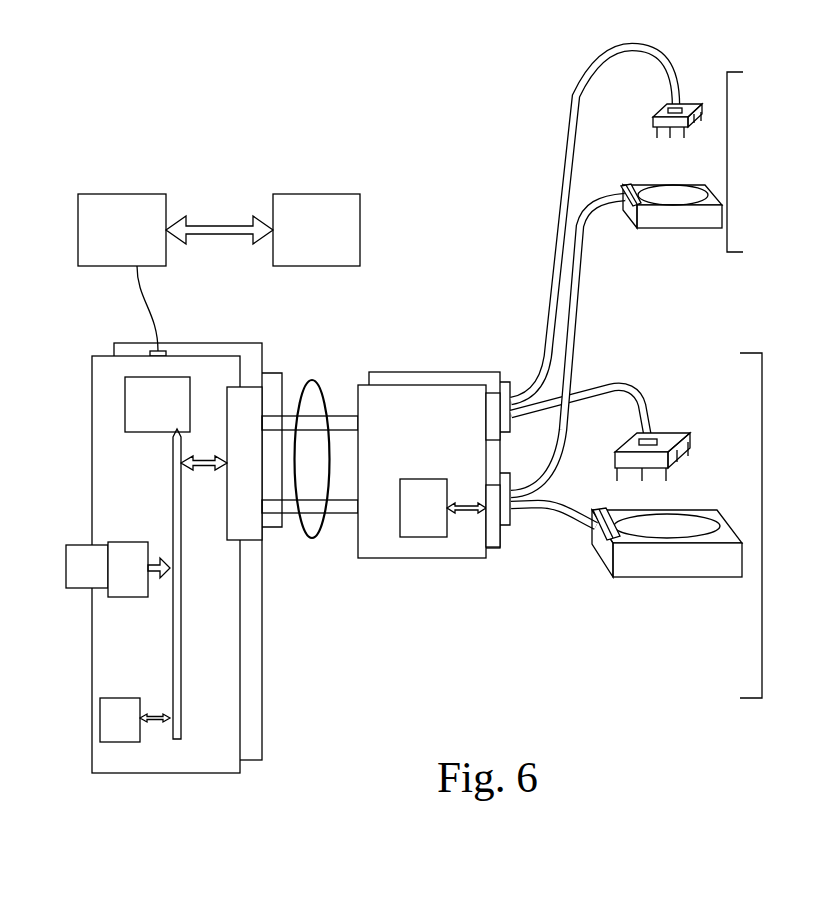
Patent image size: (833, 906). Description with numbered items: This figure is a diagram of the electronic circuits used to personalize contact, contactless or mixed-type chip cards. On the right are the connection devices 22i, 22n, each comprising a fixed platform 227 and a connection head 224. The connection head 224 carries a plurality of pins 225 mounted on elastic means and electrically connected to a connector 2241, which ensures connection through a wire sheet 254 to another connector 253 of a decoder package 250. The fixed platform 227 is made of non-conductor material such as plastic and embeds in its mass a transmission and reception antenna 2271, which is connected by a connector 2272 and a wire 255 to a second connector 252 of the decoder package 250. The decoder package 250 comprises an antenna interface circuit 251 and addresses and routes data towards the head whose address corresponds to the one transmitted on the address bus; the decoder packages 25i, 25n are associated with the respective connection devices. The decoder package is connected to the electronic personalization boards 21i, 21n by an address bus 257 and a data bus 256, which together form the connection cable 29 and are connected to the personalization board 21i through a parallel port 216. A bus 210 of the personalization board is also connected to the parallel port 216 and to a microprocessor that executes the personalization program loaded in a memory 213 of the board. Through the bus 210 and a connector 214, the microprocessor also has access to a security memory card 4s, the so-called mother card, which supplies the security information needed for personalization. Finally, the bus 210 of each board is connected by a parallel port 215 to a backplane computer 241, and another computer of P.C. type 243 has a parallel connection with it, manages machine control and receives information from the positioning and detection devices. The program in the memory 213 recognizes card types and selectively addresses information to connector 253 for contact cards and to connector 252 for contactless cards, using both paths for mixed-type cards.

The backplane computer 241 is at (108, 242).
The P.C. type computer 243 is at (302, 242).
The parallel port 215 is at (143, 407).
The parallel port 216 is at (252, 398).
The data bus 256 is at (320, 420).
The address bus 257 is at (340, 514).
The connection cable 29 is at (302, 535).
The decoder package 25n is at (422, 380).
The decoder package 25i is at (403, 550).
The decoder package 250 is at (408, 420).
The antenna interface circuit 251 is at (409, 515).
The connector 253 is at (493, 397).
The second connector 252 is at (493, 523).
The wire sheet 254 is at (610, 387).
The wire 255 is at (535, 512).
The connection device 22n is at (654, 270).
The connection device 22i is at (775, 525).
The connection head 224 is at (618, 457).
The pins 225 is at (690, 453).
The connector 2241 is at (657, 430).
The fixed platform 227 is at (690, 568).
The transmission and reception antenna 2271 is at (645, 533).
The connector 2272 is at (603, 533).
The security memory card 4s is at (78, 580).
The connector 214 is at (114, 580).
The bus 210 is at (178, 657).
The memory 213 is at (106, 732).
The personalization board 21i is at (167, 770).
The personalization board 21n is at (252, 757).